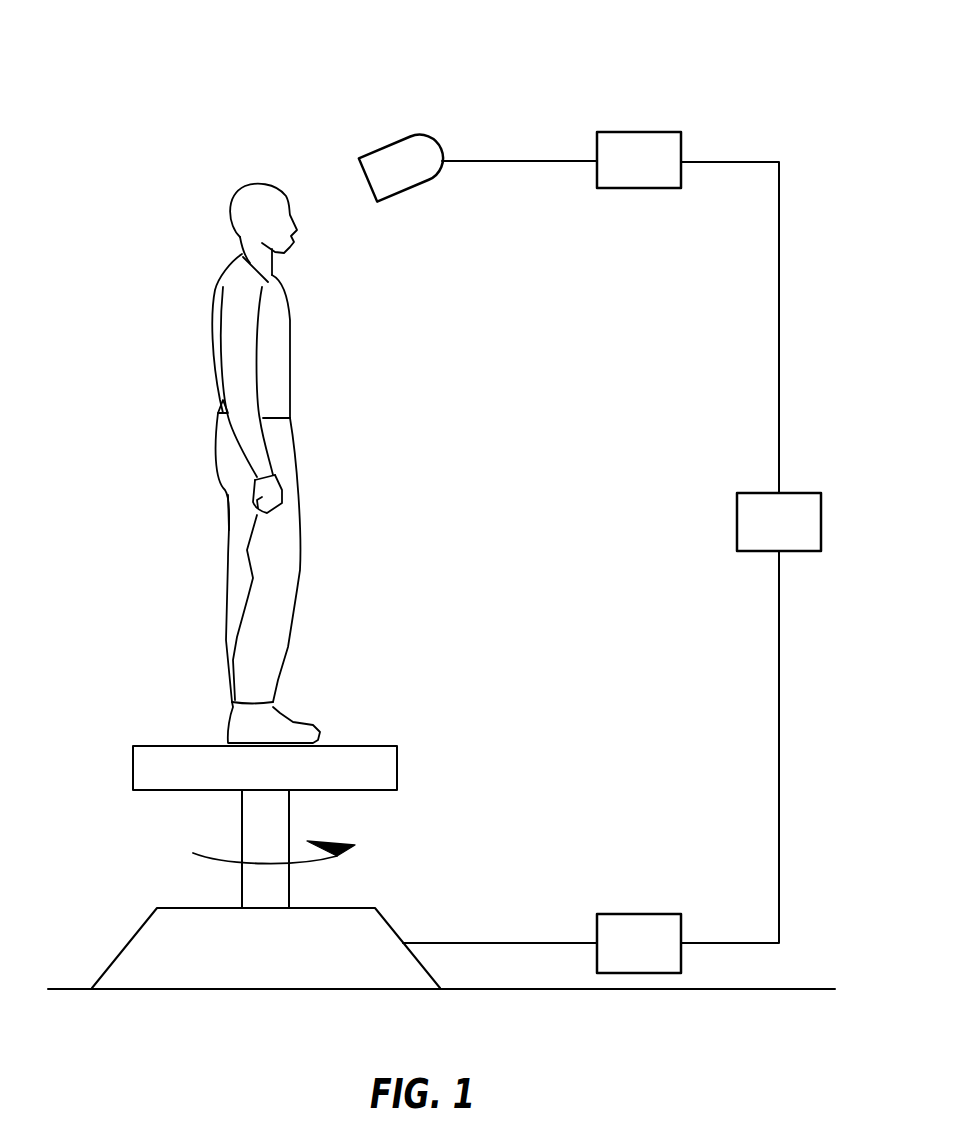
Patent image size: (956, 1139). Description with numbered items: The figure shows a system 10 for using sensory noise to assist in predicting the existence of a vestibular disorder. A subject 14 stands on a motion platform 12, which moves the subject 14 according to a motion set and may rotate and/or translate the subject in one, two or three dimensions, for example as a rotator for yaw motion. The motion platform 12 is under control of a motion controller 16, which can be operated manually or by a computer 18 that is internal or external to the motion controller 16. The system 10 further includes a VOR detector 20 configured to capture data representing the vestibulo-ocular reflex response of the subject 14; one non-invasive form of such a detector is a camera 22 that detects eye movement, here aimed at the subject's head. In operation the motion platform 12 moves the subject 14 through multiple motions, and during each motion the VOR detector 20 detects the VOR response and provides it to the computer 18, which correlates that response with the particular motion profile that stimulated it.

The system 10 is at (588, 44).
The motion platform 12 is at (415, 728).
The subject 14 is at (280, 357).
The motion controller 16 is at (625, 955).
The computer 18 is at (765, 534).
The VOR detector 20 is at (625, 172).
The camera 22 is at (325, 202).